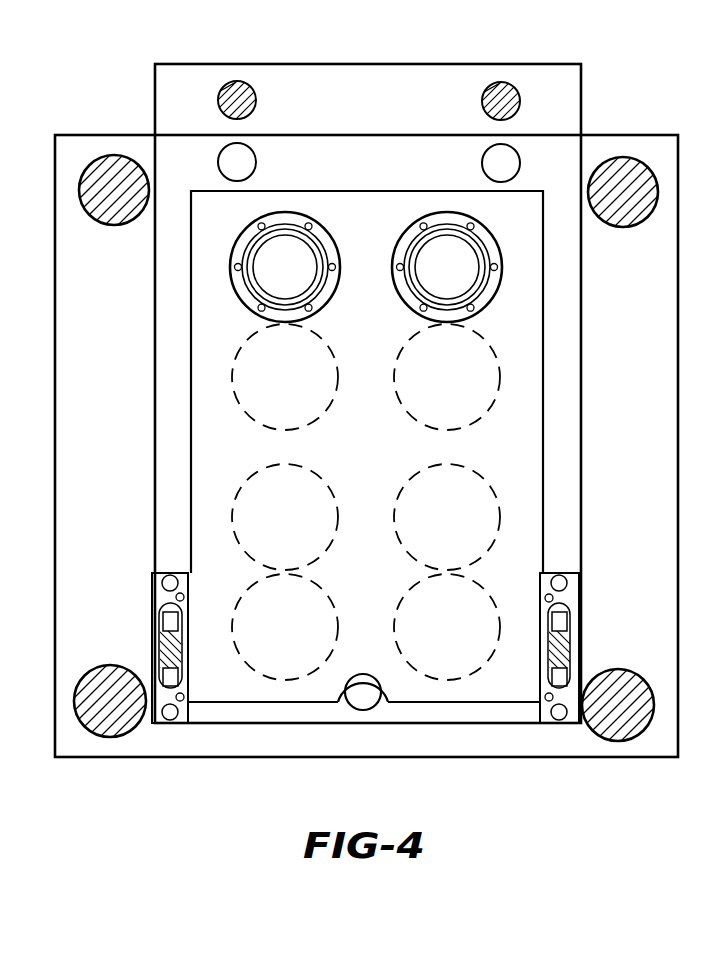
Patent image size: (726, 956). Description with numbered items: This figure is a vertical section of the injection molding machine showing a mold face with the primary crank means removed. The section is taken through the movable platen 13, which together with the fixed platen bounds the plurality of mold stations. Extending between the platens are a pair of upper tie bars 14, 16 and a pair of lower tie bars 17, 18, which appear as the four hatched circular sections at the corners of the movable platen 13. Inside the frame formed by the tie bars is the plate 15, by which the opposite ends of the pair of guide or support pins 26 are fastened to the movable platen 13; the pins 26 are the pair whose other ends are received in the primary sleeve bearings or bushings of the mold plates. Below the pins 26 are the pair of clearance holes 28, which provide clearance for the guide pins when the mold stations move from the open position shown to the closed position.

The movable platen 13 is at (118, 538).
The upper tie bar 14 is at (114, 167).
The plate 15 is at (383, 132).
The upper tie bar 16 is at (623, 178).
The lower tie bar 17 is at (113, 720).
The lower tie bar 18 is at (617, 717).
The guide pin 26 is at (243, 87).
The clearance hole 28 is at (256, 162).